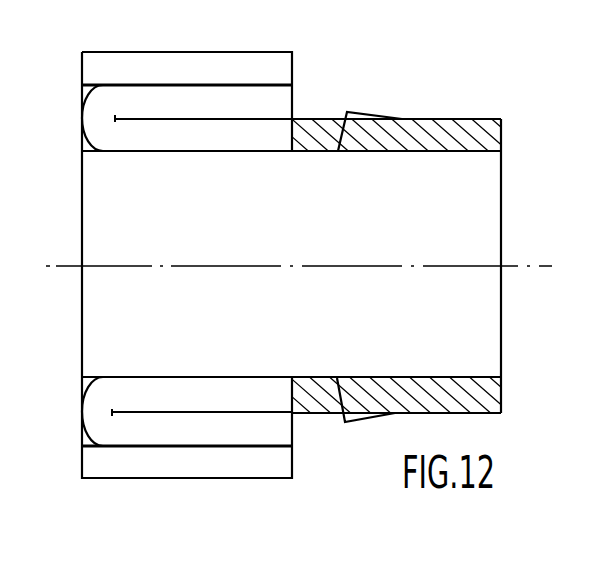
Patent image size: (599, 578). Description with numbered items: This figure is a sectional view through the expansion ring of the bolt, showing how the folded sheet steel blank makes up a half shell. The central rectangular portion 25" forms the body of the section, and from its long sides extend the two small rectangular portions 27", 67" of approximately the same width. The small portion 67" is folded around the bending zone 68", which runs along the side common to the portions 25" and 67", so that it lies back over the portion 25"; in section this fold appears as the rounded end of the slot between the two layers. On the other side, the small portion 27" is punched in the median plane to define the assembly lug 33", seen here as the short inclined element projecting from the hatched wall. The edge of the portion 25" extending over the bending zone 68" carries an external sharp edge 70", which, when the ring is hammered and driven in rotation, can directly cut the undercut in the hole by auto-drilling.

The external sharp edge 70 is at (82, 478).
The small rectangular portion 67 is at (193, 100).
The bending zone 68 is at (87, 122).
The rectangular portion 25 is at (243, 133).
The small rectangular portion 27 is at (478, 132).
The assembly lug 33 is at (353, 130).